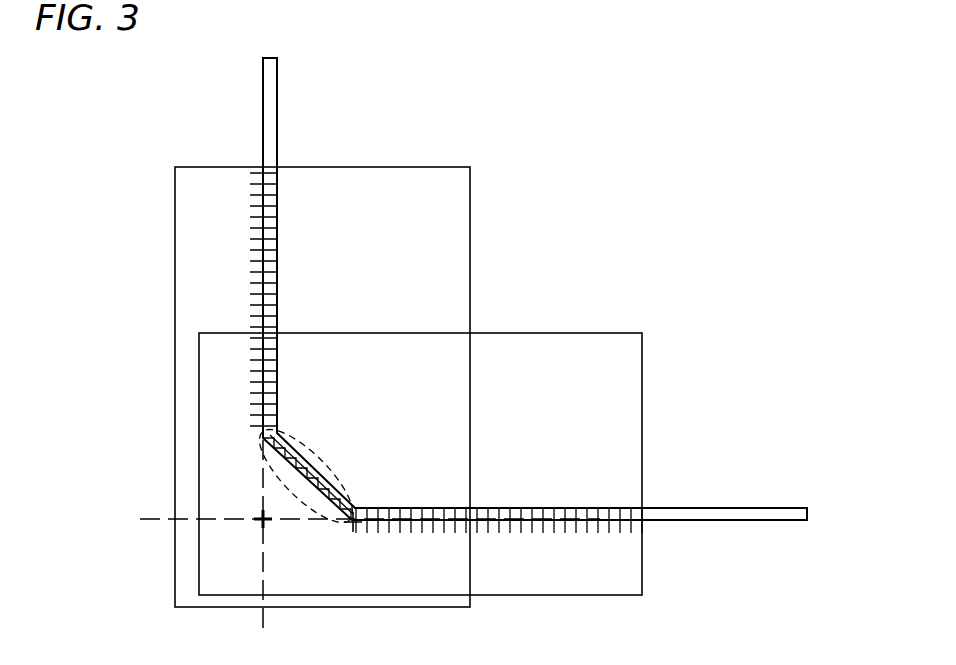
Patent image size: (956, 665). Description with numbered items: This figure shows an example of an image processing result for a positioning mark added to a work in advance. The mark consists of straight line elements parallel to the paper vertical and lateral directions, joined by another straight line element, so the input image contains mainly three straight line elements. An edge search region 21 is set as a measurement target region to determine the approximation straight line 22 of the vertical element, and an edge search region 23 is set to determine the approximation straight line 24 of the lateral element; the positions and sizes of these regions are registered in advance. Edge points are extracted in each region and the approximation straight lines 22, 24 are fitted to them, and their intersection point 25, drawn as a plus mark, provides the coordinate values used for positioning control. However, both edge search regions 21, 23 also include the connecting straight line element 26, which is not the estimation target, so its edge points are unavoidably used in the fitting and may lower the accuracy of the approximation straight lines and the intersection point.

The edge search region 21 is at (413, 167).
The approximation straight line 22 is at (266, 627).
The edge search region 23 is at (590, 333).
The approximation straight line 24 is at (151, 516).
The intersection point 25 is at (268, 526).
The straight line element 26 is at (331, 460).